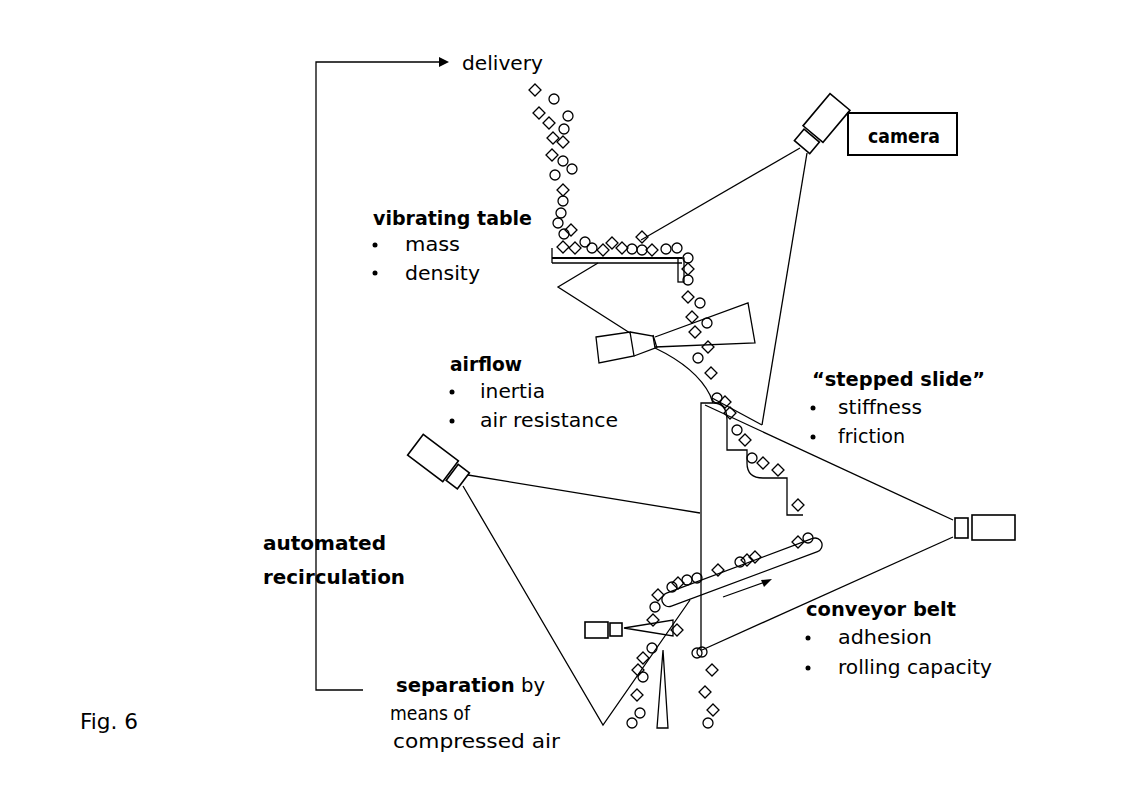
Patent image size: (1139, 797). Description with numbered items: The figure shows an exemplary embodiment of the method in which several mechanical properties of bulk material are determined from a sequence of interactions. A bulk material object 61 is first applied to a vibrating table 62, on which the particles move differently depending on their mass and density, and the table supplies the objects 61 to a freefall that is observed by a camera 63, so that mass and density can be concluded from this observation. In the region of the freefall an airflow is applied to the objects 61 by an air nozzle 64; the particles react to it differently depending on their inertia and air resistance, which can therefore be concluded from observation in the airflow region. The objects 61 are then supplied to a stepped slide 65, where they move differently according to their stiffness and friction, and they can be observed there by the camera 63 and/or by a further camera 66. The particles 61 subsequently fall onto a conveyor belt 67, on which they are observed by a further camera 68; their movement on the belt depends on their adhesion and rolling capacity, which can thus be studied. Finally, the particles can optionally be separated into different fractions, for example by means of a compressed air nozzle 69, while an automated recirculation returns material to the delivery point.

The bulk material object 61 is at (587, 123).
The vibrating table 62 is at (617, 262).
The camera 63 is at (842, 100).
The air nozzle 64 is at (612, 363).
The stepped slide 65 is at (782, 471).
The further camera 66 is at (1018, 522).
The conveyor belt 67 is at (717, 592).
The further camera 68 is at (413, 445).
The compressed air nozzle 69 is at (592, 617).